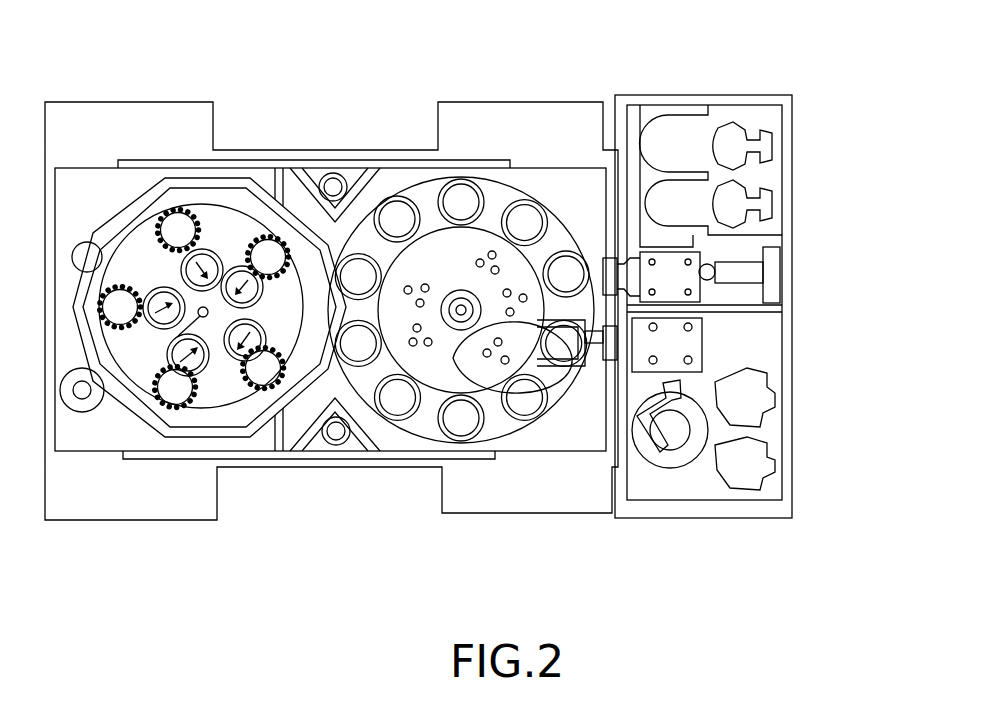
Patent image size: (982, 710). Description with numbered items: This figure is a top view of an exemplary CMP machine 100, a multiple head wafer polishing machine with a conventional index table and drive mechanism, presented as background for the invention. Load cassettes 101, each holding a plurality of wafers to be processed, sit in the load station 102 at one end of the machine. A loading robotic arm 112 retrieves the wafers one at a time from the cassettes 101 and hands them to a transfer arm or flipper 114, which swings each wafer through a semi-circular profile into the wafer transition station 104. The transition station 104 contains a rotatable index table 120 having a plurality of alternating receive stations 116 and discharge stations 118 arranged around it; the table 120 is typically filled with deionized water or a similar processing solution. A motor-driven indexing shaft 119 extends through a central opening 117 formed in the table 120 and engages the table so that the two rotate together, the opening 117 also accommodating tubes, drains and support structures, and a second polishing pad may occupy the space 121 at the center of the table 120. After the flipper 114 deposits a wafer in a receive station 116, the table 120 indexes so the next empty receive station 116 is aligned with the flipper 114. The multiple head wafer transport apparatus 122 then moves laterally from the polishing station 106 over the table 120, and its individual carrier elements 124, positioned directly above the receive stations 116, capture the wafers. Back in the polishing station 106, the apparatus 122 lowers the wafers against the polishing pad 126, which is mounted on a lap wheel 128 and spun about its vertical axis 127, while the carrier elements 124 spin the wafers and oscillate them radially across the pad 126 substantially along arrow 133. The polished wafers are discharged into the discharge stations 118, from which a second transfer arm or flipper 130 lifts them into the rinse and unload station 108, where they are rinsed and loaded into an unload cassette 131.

The CMP machine 100 is at (474, 66).
The load cassette 101 is at (770, 405).
The load station 102 is at (722, 490).
The wafer transition station 104 is at (525, 448).
The polishing station 106 is at (242, 140).
The rinse and unload station 108 is at (748, 86).
The loading robotic arm 112 is at (680, 450).
The transfer arm 114 is at (607, 352).
The receive station 116 is at (398, 212).
The central opening 117 is at (564, 270).
The discharge station 118 is at (458, 212).
The indexing shaft 119 is at (562, 277).
The index table 120 is at (428, 428).
The space 121 is at (333, 300).
The multiple head wafer transport apparatus 122 is at (245, 425).
The carrier element 124 is at (265, 252).
The polishing pad 126 is at (160, 279).
The vertical axis 127 is at (162, 345).
The lap wheel 128 is at (150, 370).
The transfer arm 130 is at (603, 262).
The unload cassette 131 is at (747, 127).
The arrow 133 is at (232, 272).